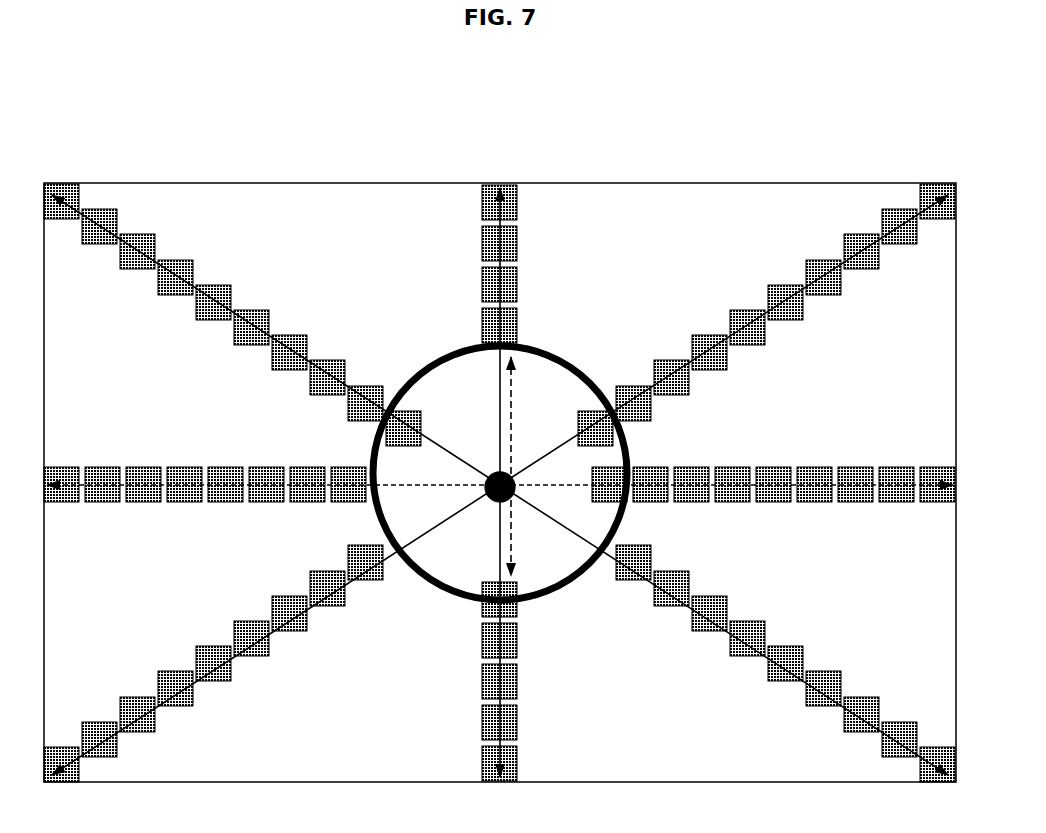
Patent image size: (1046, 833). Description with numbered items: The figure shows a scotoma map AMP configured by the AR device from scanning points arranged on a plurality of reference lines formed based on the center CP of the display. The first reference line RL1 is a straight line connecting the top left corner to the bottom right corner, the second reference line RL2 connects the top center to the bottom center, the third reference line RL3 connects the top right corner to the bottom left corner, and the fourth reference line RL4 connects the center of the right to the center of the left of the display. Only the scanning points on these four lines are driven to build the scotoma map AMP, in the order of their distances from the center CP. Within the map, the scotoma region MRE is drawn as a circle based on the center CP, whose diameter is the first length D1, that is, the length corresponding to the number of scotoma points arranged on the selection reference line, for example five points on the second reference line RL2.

The scotoma map AMP is at (620, 98).
The first reference line RL1 is at (499, 483).
The second reference line RL2 is at (472, 483).
The third reference line RL3 is at (499, 483).
The fourth reference line RL4 is at (499, 468).
The scotoma region MRE is at (558, 348).
The center CP is at (490, 466).
The first length D1 is at (529, 466).